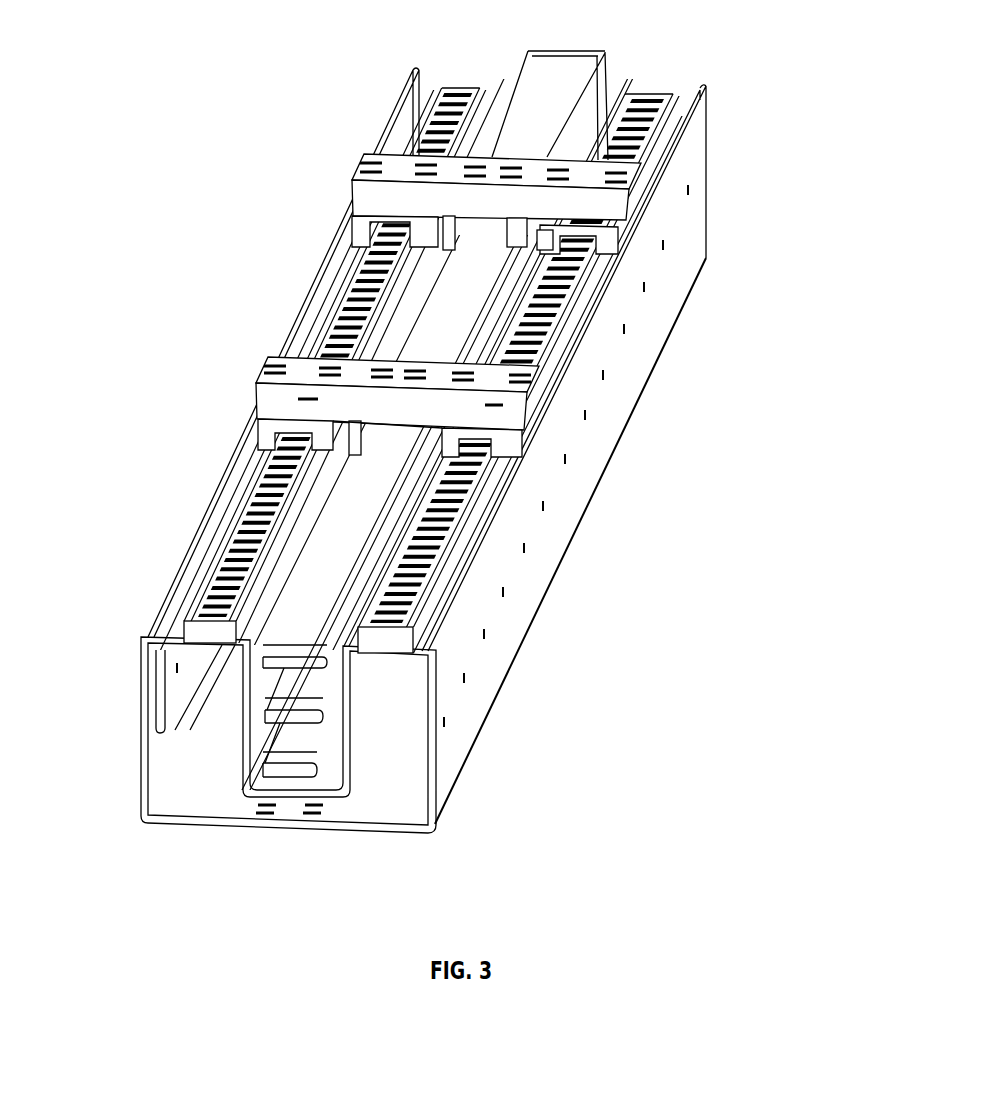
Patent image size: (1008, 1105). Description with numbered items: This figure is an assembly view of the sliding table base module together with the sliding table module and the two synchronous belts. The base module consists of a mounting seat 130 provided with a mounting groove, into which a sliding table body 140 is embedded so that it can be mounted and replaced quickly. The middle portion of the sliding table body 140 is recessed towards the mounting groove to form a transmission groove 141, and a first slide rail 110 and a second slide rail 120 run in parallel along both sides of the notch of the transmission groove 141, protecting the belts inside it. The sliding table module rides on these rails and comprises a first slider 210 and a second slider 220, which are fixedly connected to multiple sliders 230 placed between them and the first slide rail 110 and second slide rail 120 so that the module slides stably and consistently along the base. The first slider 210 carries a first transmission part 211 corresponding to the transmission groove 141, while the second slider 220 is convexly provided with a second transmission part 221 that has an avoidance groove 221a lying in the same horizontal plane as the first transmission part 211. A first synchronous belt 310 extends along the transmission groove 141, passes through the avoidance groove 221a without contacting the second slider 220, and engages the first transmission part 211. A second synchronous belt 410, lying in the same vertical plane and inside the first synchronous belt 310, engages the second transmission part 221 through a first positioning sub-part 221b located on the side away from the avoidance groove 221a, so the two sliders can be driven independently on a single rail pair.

The first slide rail 110 is at (220, 553).
The second slide rail 120 is at (472, 500).
The mounting seat 130 is at (140, 735).
The sliding table body 140 is at (355, 756).
The transmission groove 141 is at (282, 798).
The first slider 210 is at (287, 357).
The first transmission part 211 is at (417, 420).
The second slider 220 is at (445, 203).
The second transmission part 221 is at (540, 232).
The avoidance groove 221a is at (447, 200).
The first positioning sub-part 221b is at (517, 258).
The sliders 230 is at (258, 422).
The first synchronous belt 310 is at (333, 603).
The second synchronous belt 410 is at (320, 653).